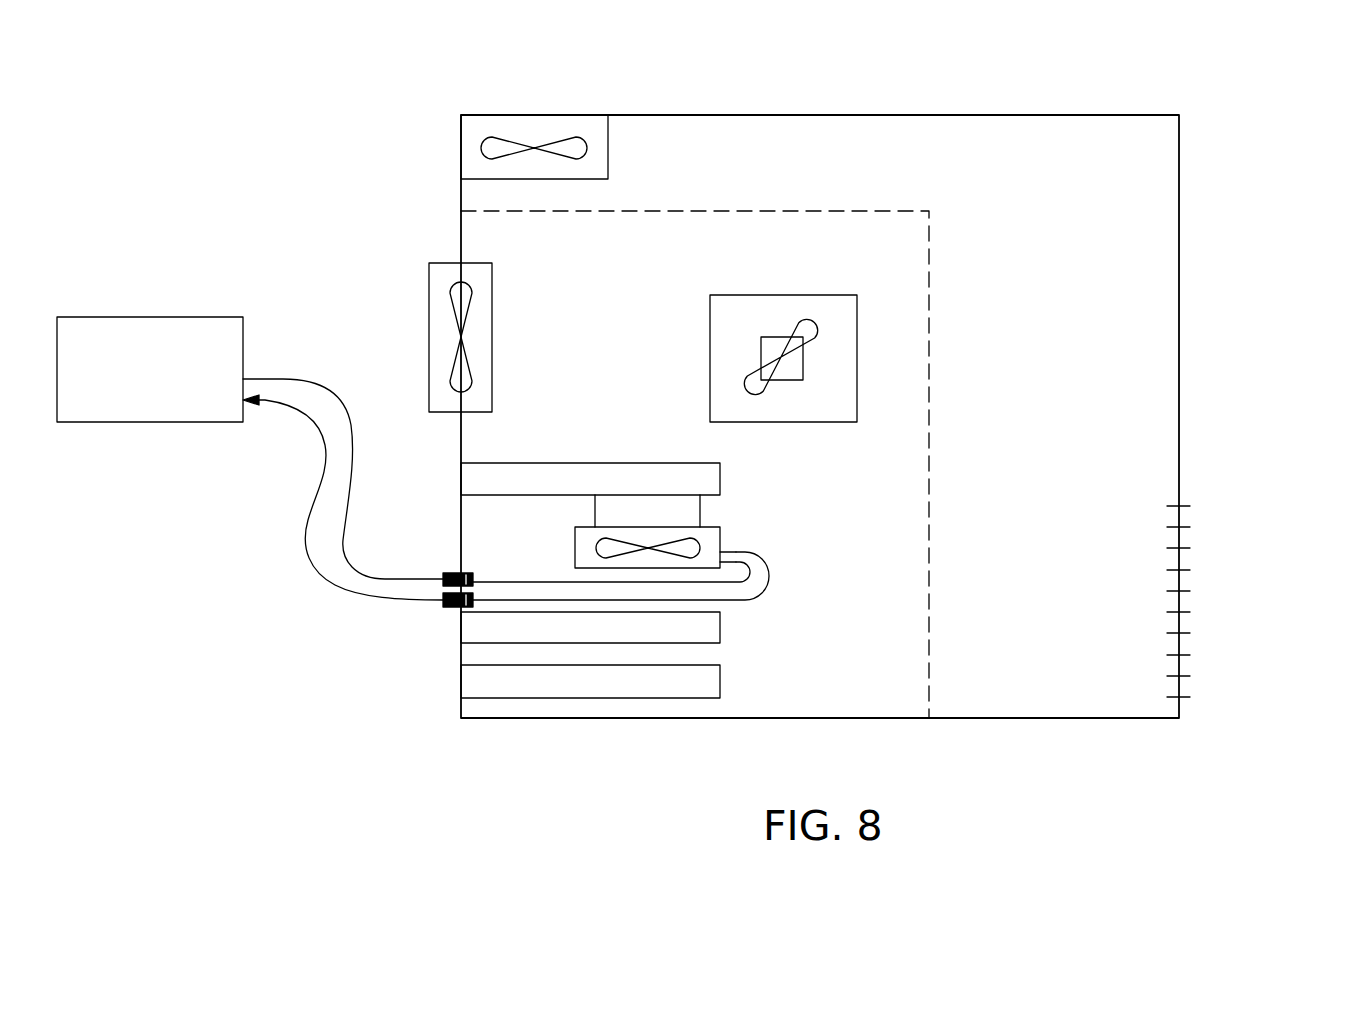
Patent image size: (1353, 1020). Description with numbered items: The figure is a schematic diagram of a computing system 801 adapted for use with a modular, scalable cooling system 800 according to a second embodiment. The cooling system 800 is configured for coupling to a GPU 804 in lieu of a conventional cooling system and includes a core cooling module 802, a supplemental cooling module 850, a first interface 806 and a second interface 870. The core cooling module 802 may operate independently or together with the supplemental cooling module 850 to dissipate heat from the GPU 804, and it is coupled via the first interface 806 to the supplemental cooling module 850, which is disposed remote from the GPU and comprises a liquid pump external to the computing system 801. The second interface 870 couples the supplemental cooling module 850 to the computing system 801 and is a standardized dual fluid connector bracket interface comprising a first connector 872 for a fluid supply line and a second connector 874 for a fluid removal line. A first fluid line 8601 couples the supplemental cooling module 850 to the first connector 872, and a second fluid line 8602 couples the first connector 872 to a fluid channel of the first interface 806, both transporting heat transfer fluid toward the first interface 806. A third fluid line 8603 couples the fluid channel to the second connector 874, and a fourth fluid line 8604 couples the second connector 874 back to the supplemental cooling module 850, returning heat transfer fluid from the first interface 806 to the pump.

The cooling system 800 is at (148, 212).
The computing system 801 is at (1035, 115).
The core cooling module 802 is at (575, 547).
The GPU 804 is at (683, 510).
The first interface 806 is at (722, 547).
The supplemental cooling module 850 is at (170, 386).
The first fluid line 8601 is at (350, 560).
The second fluid line 8602 is at (761, 595).
The third fluid line 8603 is at (728, 600).
The fourth fluid line 8604 is at (333, 600).
The second interface 870 is at (445, 683).
The first connector 872 is at (458, 574).
The second connector 874 is at (452, 608).